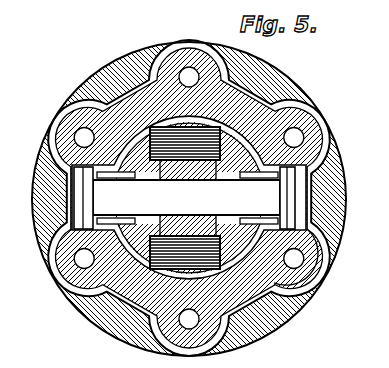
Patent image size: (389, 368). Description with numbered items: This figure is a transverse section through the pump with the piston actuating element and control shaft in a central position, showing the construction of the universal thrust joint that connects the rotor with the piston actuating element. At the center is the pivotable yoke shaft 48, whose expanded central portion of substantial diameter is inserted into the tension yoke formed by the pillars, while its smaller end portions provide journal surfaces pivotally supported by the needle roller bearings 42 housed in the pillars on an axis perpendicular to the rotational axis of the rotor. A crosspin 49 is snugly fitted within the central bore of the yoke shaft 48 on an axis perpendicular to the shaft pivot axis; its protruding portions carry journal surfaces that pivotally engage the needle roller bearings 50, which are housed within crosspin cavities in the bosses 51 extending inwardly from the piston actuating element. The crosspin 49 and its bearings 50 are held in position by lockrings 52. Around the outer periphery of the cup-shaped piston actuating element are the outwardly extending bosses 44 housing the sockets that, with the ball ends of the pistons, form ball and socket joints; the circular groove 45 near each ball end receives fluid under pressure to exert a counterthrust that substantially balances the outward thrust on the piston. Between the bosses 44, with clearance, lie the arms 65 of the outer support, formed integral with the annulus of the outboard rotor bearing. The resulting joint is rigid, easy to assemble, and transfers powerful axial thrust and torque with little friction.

The arms 65 is at (118, 64).
The lockrings 52 is at (48, 160).
The needle roller bearings 42 is at (148, 100).
The circular groove 45 is at (238, 96).
The bosses 44 is at (300, 284).
The crosspin 49 is at (186, 187).
The yoke shaft 48 is at (219, 178).
The needle roller bearings 50 is at (267, 198).
The bosses 51 is at (122, 219).